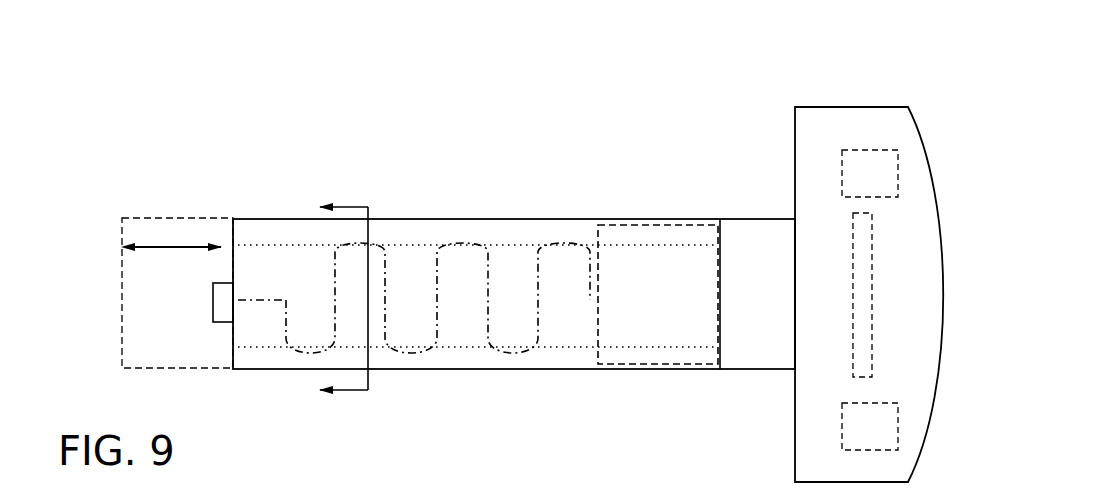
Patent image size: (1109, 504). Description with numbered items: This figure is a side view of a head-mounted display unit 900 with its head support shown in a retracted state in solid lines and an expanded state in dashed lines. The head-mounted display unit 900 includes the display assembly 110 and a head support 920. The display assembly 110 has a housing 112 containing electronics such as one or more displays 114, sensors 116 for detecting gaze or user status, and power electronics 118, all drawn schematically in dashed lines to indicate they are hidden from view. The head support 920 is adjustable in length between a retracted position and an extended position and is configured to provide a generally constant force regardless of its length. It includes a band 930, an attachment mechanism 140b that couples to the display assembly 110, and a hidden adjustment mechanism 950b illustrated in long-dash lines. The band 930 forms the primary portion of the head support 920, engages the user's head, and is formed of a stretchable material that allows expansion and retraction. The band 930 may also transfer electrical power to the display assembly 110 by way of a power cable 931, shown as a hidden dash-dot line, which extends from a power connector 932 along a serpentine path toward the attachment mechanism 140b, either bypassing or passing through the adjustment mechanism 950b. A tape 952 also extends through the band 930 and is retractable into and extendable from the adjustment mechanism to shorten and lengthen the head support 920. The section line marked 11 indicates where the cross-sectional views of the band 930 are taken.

The head-mounted display unit 900 is at (243, 127).
The display assembly 110 is at (815, 245).
The housing 112 is at (795, 157).
The display 114 is at (853, 282).
The sensors 116 is at (870, 173).
The power electronics 118 is at (870, 426).
The head support 920 is at (512, 182).
The band 930 is at (407, 370).
The power cable 931 is at (268, 302).
The power connector 932 is at (213, 302).
The tape 952 is at (465, 350).
The adjustment mechanism 950b is at (647, 370).
The attachment mechanism 140b is at (758, 370).
The section line 11 is at (342, 301).